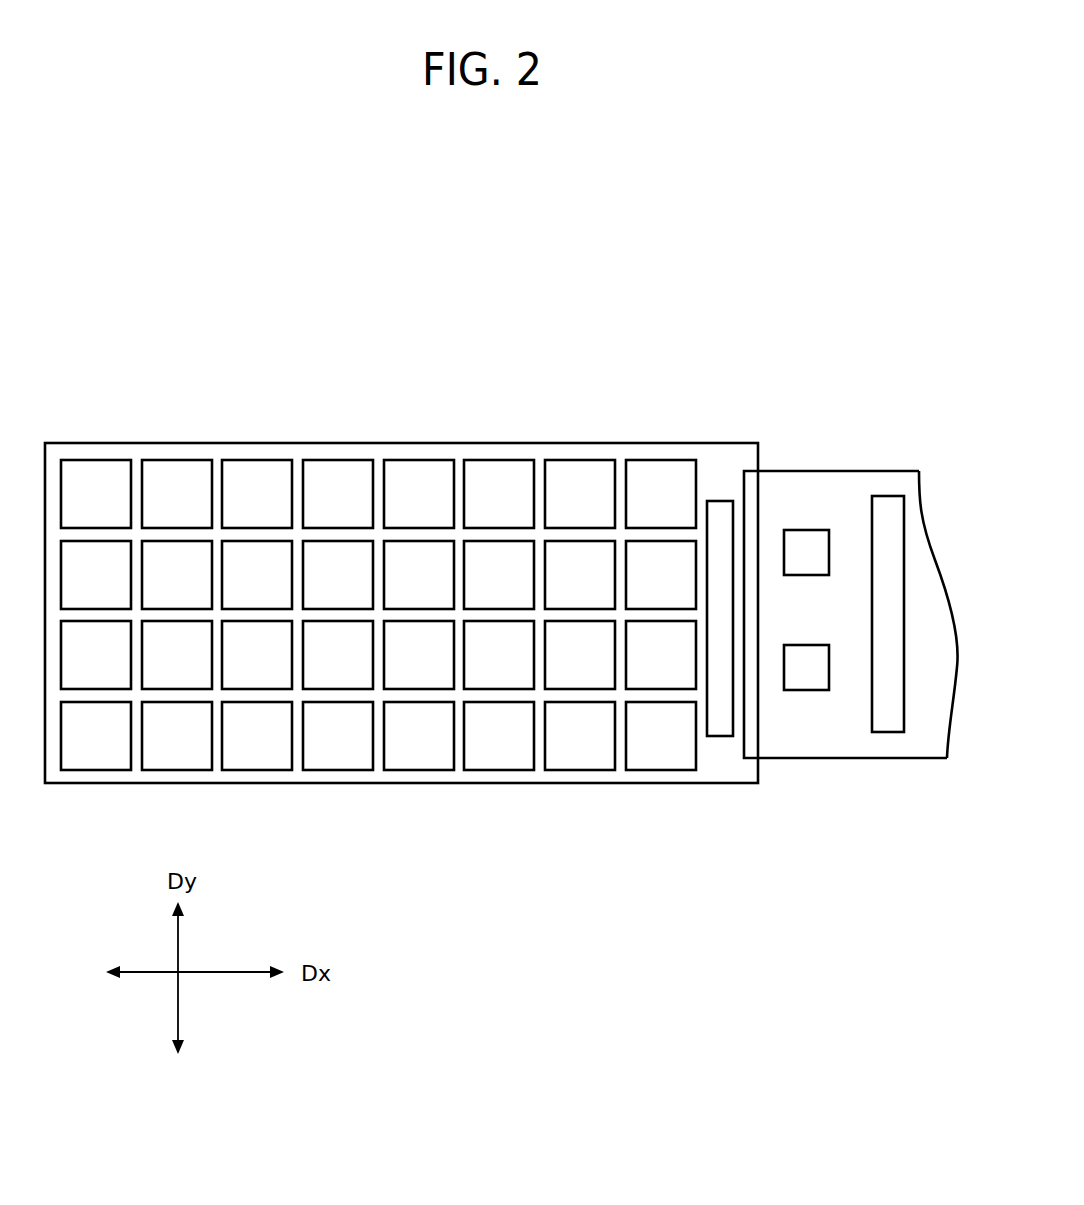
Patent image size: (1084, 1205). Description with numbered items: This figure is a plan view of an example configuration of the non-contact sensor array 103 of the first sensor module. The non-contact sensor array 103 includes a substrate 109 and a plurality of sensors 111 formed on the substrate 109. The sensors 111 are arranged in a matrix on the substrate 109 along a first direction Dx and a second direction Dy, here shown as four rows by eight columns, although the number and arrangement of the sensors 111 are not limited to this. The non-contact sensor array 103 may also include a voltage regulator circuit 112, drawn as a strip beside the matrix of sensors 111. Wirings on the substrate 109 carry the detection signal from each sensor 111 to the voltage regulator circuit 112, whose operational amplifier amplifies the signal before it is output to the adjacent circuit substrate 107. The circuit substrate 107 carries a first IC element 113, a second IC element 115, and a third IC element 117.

The non-contact sensor array 103 is at (616, 318).
The circuit substrate 107 is at (808, 468).
The substrate 109 is at (423, 785).
The sensor 111 is at (578, 458).
The voltage regulator circuit 112 is at (718, 737).
The first IC element 113 is at (805, 575).
The second IC element 115 is at (805, 690).
The third IC element 117 is at (887, 732).